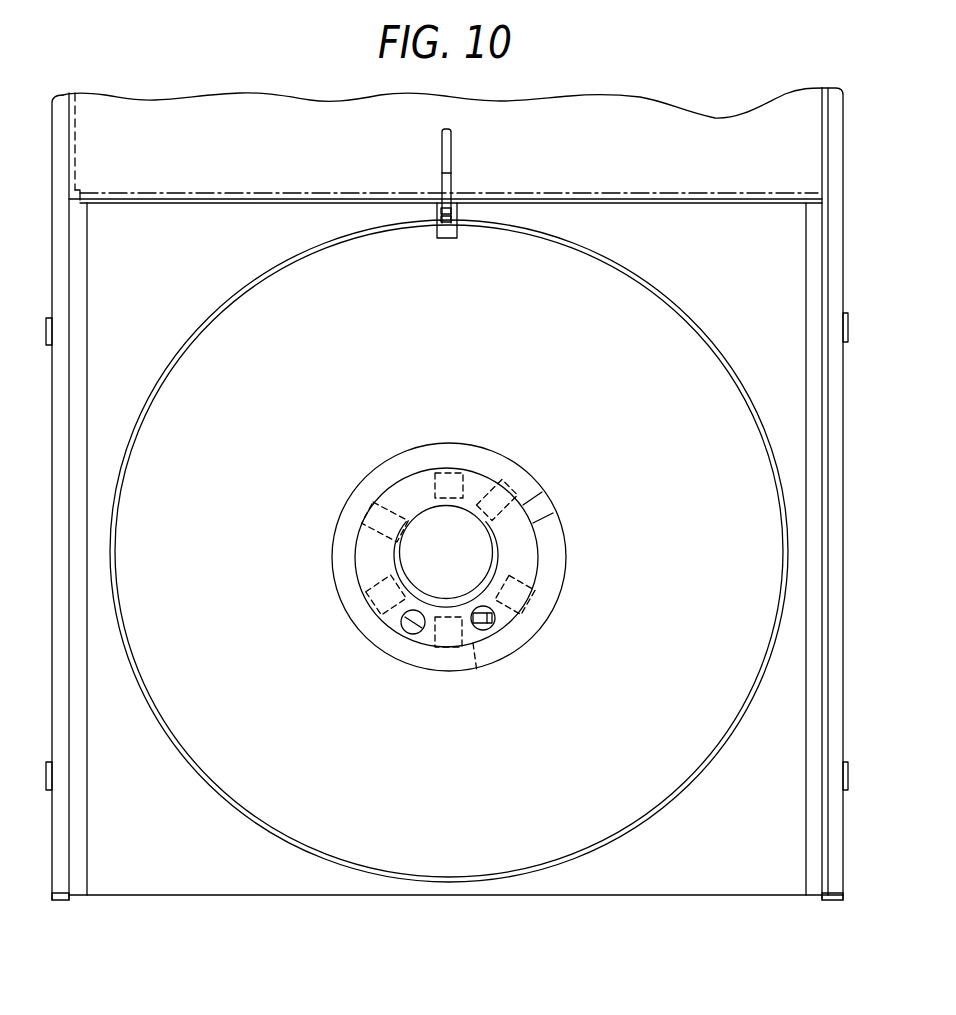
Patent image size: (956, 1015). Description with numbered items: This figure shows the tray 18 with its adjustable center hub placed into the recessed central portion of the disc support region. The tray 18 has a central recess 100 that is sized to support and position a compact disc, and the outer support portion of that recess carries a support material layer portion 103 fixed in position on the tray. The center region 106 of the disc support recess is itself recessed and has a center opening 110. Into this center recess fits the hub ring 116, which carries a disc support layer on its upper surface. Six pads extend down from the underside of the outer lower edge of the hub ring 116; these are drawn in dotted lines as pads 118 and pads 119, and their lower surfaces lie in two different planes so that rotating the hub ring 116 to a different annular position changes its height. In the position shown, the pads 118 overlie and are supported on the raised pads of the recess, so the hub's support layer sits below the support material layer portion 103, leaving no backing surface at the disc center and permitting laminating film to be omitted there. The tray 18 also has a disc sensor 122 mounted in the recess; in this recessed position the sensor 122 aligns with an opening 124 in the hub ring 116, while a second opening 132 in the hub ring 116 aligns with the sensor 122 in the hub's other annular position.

The tray 18 is at (142, 857).
The central recess 100 is at (205, 318).
The support material layer portion 103 is at (637, 793).
The center region 106 is at (346, 574).
The center opening 110 is at (452, 543).
The hub ring 116 is at (523, 563).
The pads 118 is at (432, 477).
The pads 119 is at (555, 497).
The disc sensor 122 is at (480, 630).
The opening 124 is at (493, 628).
The second opening 132 is at (420, 633).